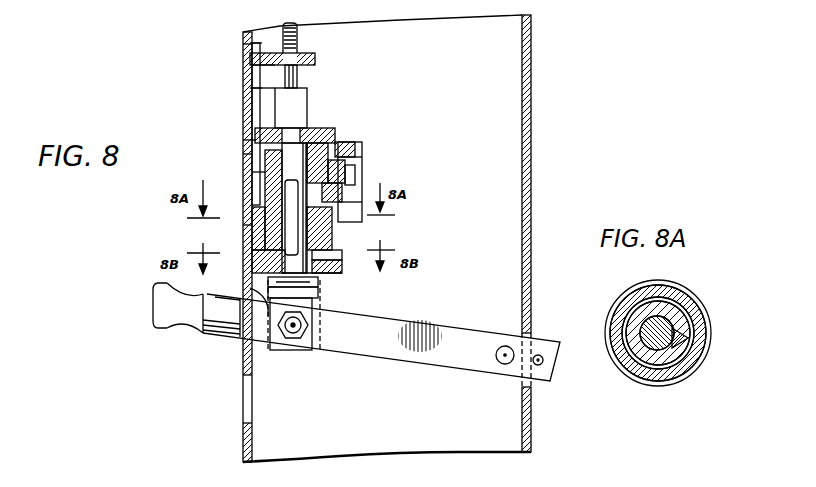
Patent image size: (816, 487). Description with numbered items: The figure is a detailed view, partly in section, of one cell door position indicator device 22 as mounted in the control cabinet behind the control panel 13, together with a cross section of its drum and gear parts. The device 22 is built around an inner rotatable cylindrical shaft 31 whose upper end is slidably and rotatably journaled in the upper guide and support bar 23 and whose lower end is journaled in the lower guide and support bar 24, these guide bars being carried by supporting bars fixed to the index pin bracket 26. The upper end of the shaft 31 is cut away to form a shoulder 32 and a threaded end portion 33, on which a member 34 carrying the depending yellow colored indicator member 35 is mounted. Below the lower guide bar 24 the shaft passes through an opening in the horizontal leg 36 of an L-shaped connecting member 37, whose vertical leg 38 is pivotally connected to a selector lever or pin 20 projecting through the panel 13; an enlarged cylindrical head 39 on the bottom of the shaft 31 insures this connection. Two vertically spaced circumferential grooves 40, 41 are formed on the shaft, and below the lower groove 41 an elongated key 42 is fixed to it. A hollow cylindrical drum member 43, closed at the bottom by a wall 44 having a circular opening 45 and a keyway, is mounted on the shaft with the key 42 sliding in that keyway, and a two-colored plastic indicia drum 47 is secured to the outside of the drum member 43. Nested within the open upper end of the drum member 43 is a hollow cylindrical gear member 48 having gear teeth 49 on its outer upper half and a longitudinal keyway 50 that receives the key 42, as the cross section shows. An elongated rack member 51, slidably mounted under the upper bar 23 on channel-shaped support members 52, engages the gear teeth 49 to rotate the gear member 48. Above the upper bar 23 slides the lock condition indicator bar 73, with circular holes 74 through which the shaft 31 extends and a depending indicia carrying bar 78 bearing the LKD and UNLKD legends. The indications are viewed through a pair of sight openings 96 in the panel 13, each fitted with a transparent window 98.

In FIG. 8, the control panel 13 is at (243, 447).
In FIG. 8, the selector lever or pin 20 is at (371, 346).
In FIG. 8, the cell door position indicator device 22 is at (399, 102).
In FIG. 8, the upper guide and support bar 23 is at (352, 150).
In FIG. 8, the lower guide and support bar 24 is at (345, 282).
In FIG. 8, the index pin bracket 26 is at (532, 216).
In FIG. 8, the inner rotatable cylindrical shaft 31 is at (266, 268).
In FIG. 8A, the inner rotatable cylindrical shaft 31 is at (652, 372).
In FIG. 8, the shoulder 32 is at (300, 68).
In FIG. 8, the threaded end portion 33 is at (298, 34).
In FIG. 8, the member 34 is at (318, 60).
In FIG. 8, the yellow colored indicator member 35 is at (262, 88).
In FIG. 8, the horizontal leg 36 is at (247, 336).
In FIG. 8, the L-shaped connecting member 37 is at (337, 300).
In FIG. 8, the vertical leg 38 is at (278, 352).
In FIG. 8, the enlarged cylindrical head 39 is at (308, 352).
In FIG. 8, the circumferential recess or groove 40 is at (258, 72).
In FIG. 8, the circumferential recess or groove 41 is at (316, 128).
In FIG. 8, the elongated key 42 is at (290, 230).
In FIG. 8A, the elongated key 42 is at (684, 350).
In FIG. 8, the hollow cylindrical drum member 43 is at (342, 242).
In FIG. 8A, the hollow cylindrical drum member 43 is at (672, 290).
In FIG. 8, the bottom wall 44 is at (340, 285).
In FIG. 8, the circular opening 45 is at (262, 234).
In FIG. 8, the two-colored plastic cylindrical indicia drum 47 is at (333, 228).
In FIG. 8, the hollow cylindrical gear member 48 is at (344, 263).
In FIG. 8A, the hollow cylindrical gear member 48 is at (680, 318).
In FIG. 8, the gear teeth 49 is at (355, 188).
In FIG. 8A, the keyway 50 is at (688, 340).
In FIG. 8, the elongated rack member 51 is at (348, 175).
In FIG. 8, the channel-shaped support member 52 is at (363, 150).
In FIG. 8, the lock condition indicator bar 73 is at (343, 141).
In FIG. 8, the circular hole 74 is at (243, 44).
In FIG. 8, the depending indicia carrying bar 78 is at (257, 172).
In FIG. 8, the pair of sight openings 96 is at (240, 225).
In FIG. 8, the transparent window 98 is at (243, 154).